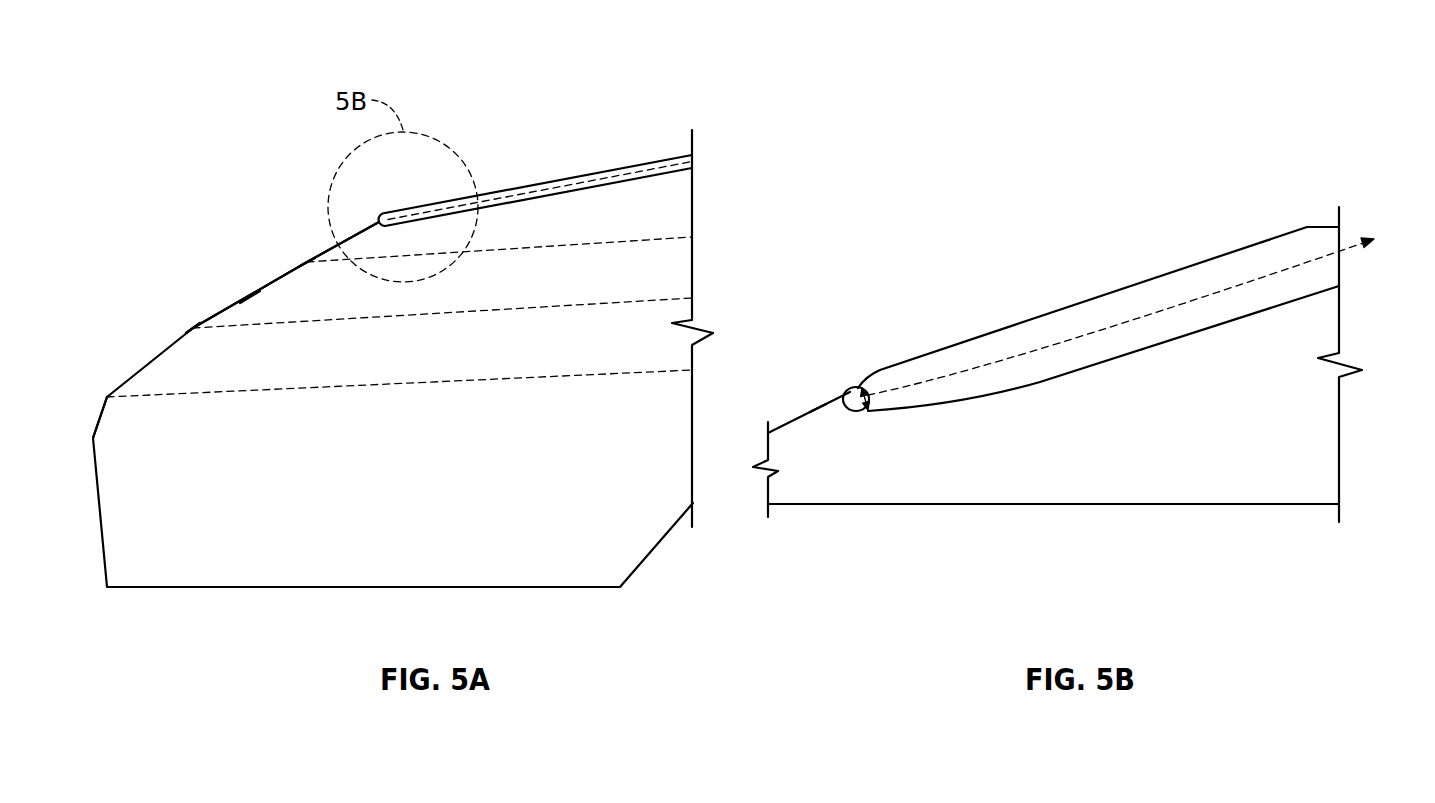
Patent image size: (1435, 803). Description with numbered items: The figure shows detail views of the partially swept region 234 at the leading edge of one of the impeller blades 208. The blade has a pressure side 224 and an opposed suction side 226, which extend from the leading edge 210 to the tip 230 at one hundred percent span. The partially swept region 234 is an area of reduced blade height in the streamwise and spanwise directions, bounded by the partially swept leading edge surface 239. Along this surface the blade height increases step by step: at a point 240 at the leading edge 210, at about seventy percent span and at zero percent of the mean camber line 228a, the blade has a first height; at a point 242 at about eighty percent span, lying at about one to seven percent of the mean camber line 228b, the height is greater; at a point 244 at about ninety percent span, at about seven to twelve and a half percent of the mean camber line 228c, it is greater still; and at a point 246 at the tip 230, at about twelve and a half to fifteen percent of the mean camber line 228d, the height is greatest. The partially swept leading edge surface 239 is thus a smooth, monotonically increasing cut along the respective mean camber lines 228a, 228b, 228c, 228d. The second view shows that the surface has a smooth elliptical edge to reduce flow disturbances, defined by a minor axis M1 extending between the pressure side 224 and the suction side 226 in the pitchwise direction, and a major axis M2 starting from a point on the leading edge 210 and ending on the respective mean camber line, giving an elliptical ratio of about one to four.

In FIG. 5A, the impeller blade 208 is at (380, 157).
In FIG. 5A, the leading edge 210 is at (152, 330).
In FIG. 5B, the leading edge 210 is at (772, 417).
In FIG. 5A, the pressure side 224 is at (250, 310).
In FIG. 5B, the pressure side 224 is at (1270, 237).
In FIG. 5A, the suction side 226 is at (673, 218).
In FIG. 5B, the suction side 226 is at (1323, 438).
In FIG. 5A, the mean camber line 228a is at (538, 378).
In FIG. 5A, the mean camber line 228b is at (528, 308).
In FIG. 5A, the mean camber line 228c is at (528, 247).
In FIG. 5A, the mean camber line 228d is at (590, 175).
In FIG. 5B, the mean camber line 228d is at (1070, 342).
In FIG. 5A, the tip 230 is at (633, 158).
In FIG. 5A, the partially swept region 234 is at (289, 262).
In FIG. 5B, the partially swept region 234 is at (794, 437).
In FIG. 5A, the partially swept leading edge surface 239 is at (182, 237).
In FIG. 5B, the partially swept leading edge surface 239 is at (802, 383).
In FIG. 5A, the point 240 is at (105, 395).
In FIG. 5A, the point 242 is at (193, 328).
In FIG. 5A, the point 244 is at (305, 261).
In FIG. 5A, the point 246 is at (380, 216).
In FIG. 5B, the point 246 is at (843, 400).
In FIG. 5B, the minor axis M1 is at (847, 413).
In FIG. 5B, the major axis M2 is at (1352, 248).